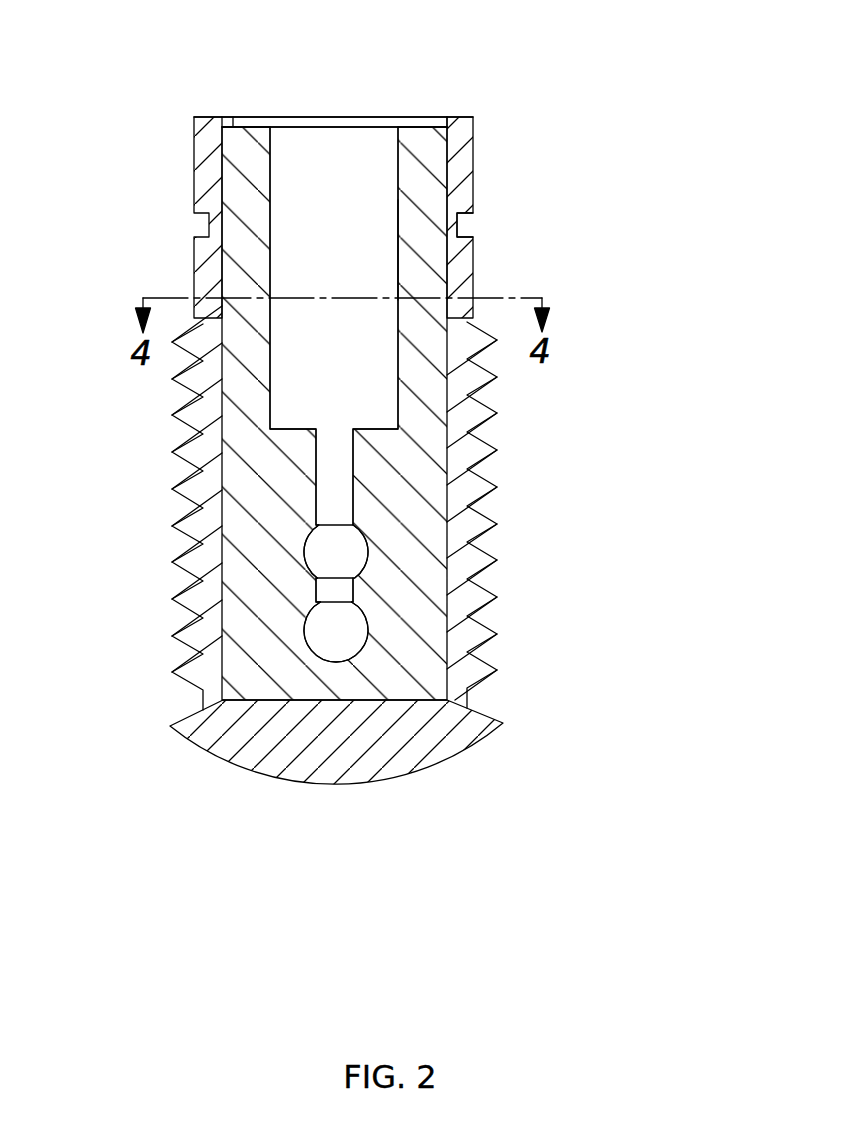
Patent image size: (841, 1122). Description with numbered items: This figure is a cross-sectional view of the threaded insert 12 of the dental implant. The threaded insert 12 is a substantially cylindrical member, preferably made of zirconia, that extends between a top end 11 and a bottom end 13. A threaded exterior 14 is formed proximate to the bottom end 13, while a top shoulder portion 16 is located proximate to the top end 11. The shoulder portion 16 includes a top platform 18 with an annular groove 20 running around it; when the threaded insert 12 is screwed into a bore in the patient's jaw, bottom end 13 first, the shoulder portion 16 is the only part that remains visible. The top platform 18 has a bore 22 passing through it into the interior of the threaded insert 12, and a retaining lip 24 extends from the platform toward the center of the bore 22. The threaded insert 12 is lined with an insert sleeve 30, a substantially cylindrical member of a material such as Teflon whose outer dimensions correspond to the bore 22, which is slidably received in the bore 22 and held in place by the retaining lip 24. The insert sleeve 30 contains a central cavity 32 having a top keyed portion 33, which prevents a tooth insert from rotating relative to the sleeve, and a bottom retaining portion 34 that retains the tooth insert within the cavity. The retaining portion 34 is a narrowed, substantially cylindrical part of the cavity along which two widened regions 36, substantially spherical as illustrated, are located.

The top end 11 is at (237, 68).
The threaded insert 12 is at (619, 452).
The bottom end 13 is at (414, 800).
The threaded exterior 14 is at (490, 404).
The top shoulder portion 16 is at (165, 156).
The top platform 18 is at (434, 127).
The annular groove 20 is at (492, 226).
The bore 22 is at (418, 93).
The retaining lip 24 is at (243, 128).
The insert sleeve 30 is at (415, 514).
The central cavity 32 is at (323, 133).
The top keyed portion 33 is at (400, 268).
The retaining portion 34 is at (367, 572).
The widened region 36 is at (303, 627).